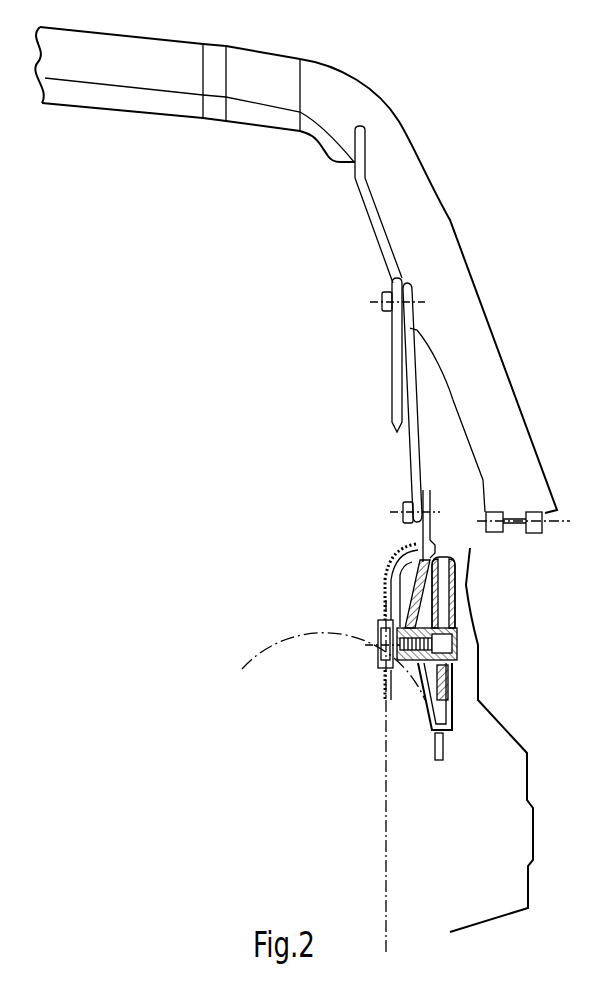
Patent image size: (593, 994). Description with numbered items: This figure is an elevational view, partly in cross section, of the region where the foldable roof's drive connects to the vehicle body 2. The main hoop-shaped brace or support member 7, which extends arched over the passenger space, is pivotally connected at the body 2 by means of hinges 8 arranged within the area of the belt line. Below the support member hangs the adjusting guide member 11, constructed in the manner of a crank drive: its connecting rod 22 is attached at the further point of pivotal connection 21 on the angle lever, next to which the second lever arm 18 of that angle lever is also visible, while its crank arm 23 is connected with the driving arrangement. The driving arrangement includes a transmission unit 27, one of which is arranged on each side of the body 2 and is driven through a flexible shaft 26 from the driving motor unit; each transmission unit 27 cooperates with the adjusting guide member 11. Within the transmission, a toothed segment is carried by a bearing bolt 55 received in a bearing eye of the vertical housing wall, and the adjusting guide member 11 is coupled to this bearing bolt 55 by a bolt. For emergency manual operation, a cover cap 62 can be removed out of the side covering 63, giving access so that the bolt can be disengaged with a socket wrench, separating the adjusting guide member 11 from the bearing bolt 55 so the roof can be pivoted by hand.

The body 2 is at (502, 708).
The main hoop-shaped brace or support member 7 is at (483, 327).
The hinges 8 is at (551, 526).
The adjusting guide member 11 is at (399, 485).
The second lever arm 18 is at (393, 392).
The further point of pivotal connection 21 is at (379, 297).
The connecting rod 22 is at (410, 448).
The crank arm 23 is at (423, 535).
The flexible shafts 26 is at (283, 642).
The transmission unit 27 is at (456, 731).
The bearing bolt 55 is at (455, 632).
The cover cap 62 is at (374, 658).
The side covering 63 is at (383, 578).